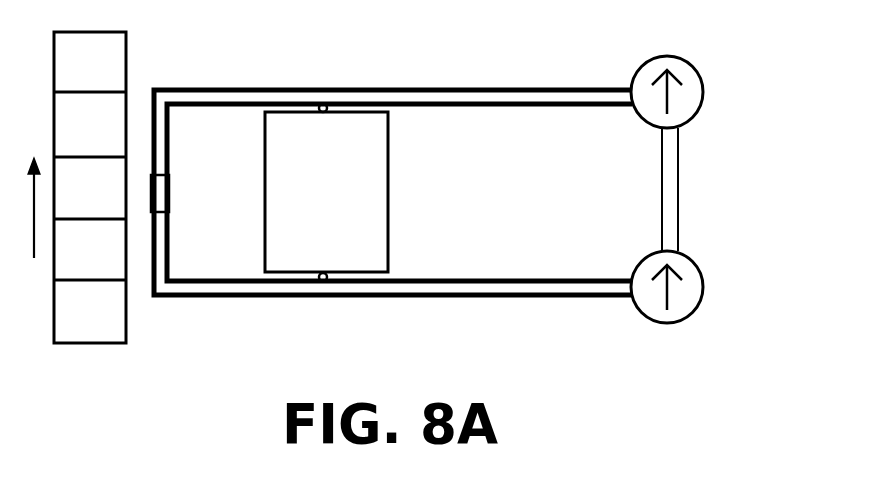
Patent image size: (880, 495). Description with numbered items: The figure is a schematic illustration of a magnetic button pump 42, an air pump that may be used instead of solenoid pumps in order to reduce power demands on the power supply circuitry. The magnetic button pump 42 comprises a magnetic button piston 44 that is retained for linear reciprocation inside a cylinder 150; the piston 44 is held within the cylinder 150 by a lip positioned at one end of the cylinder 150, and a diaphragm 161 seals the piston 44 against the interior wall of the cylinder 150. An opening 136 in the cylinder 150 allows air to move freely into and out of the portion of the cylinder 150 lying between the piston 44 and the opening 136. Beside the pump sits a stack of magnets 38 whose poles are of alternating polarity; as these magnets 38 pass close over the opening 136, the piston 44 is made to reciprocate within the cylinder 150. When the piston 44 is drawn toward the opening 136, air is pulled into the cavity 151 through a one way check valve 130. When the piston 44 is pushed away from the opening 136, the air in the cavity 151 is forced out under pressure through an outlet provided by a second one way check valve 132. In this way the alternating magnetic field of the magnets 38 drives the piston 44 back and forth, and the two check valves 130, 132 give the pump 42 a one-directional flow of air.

The magnets 38 is at (112, 333).
The opening 136 is at (160, 190).
The magnetic button piston 44 is at (345, 148).
The cavity 151 is at (557, 201).
The cylinder 150 is at (583, 298).
The diaphragm 161 is at (325, 283).
The one way check valve 132 is at (703, 90).
The one way check valve 130 is at (700, 306).
The magnetic button pump 42 is at (679, 203).